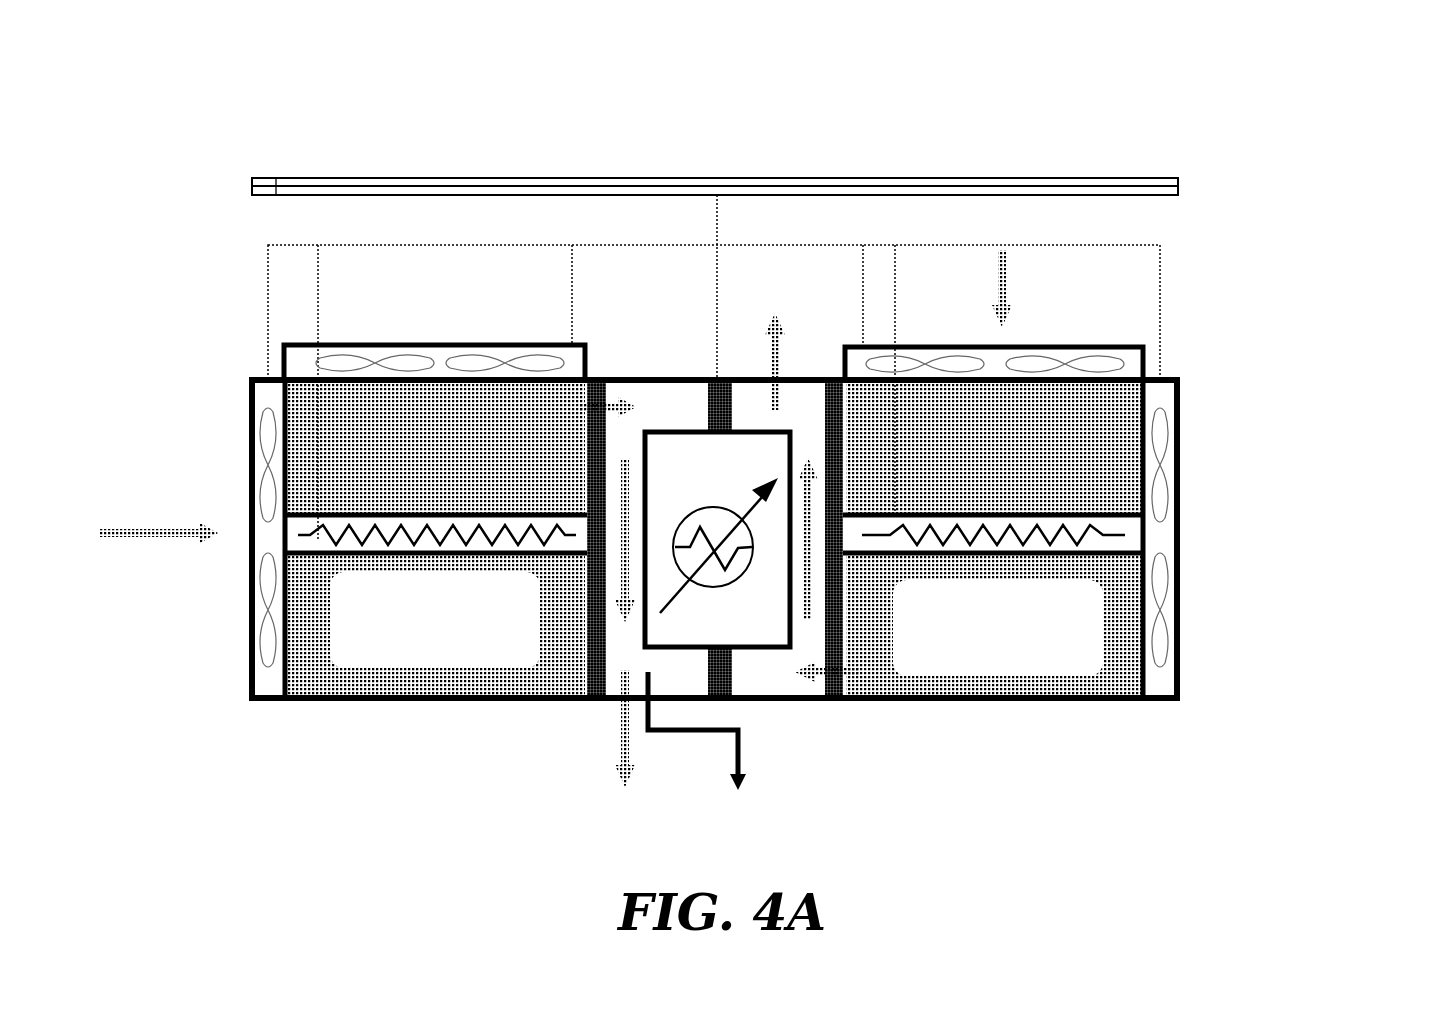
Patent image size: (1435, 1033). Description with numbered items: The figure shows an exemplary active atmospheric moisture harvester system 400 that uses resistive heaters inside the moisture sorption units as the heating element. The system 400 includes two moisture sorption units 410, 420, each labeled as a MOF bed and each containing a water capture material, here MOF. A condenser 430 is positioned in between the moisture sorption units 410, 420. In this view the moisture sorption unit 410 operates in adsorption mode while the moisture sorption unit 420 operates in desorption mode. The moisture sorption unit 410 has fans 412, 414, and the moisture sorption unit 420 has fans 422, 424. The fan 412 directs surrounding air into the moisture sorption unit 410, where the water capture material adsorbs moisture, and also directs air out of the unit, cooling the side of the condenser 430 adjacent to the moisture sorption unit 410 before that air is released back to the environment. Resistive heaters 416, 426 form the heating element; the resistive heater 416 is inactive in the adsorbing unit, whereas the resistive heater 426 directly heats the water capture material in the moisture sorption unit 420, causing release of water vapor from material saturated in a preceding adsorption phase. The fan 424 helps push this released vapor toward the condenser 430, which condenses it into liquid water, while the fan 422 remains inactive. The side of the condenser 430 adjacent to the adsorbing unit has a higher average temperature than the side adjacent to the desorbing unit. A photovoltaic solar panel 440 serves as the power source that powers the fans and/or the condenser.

The active atmospheric moisture harvester system 400 is at (250, 85).
The photovoltaic solar panel 440 is at (715, 121).
The fan 422 is at (434, 331).
The moisture sorption unit 420 is at (436, 539).
The resistive heater 426 is at (315, 545).
The fan 424 is at (268, 683).
The condenser 430 is at (717, 539).
The moisture sorption unit 410 is at (994, 539).
The resistive heater 416 is at (1130, 523).
The fan 412 is at (1130, 365).
The fan 414 is at (1158, 682).